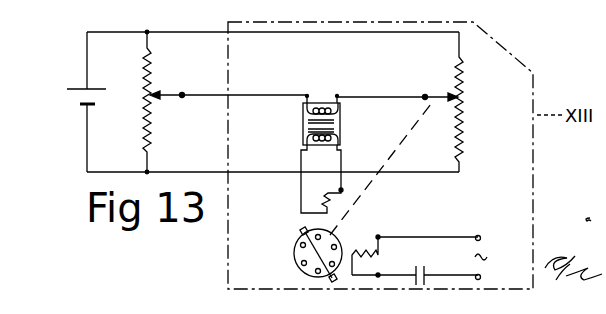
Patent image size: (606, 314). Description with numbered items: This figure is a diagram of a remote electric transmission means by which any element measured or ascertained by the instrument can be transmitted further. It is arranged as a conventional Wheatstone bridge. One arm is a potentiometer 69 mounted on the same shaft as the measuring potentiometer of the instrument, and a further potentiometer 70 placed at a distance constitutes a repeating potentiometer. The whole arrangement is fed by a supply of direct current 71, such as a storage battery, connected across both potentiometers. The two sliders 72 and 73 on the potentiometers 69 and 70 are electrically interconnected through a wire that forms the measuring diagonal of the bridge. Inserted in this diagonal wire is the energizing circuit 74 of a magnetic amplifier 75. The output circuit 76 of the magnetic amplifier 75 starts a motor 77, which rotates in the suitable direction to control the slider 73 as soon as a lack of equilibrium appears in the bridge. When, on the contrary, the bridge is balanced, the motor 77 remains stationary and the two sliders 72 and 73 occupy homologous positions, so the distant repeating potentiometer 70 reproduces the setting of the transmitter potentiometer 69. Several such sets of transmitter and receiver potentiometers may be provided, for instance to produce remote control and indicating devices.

The potentiometer 69 is at (153, 131).
The repeating potentiometer 70 is at (463, 120).
The supply of direct current 71 is at (78, 97).
The slider 72 is at (170, 92).
The slider 73 is at (437, 95).
The energizing circuit 74 is at (317, 107).
The magnetic amplifier 75 is at (297, 106).
The output circuit 76 is at (301, 193).
The motor 77 is at (296, 248).